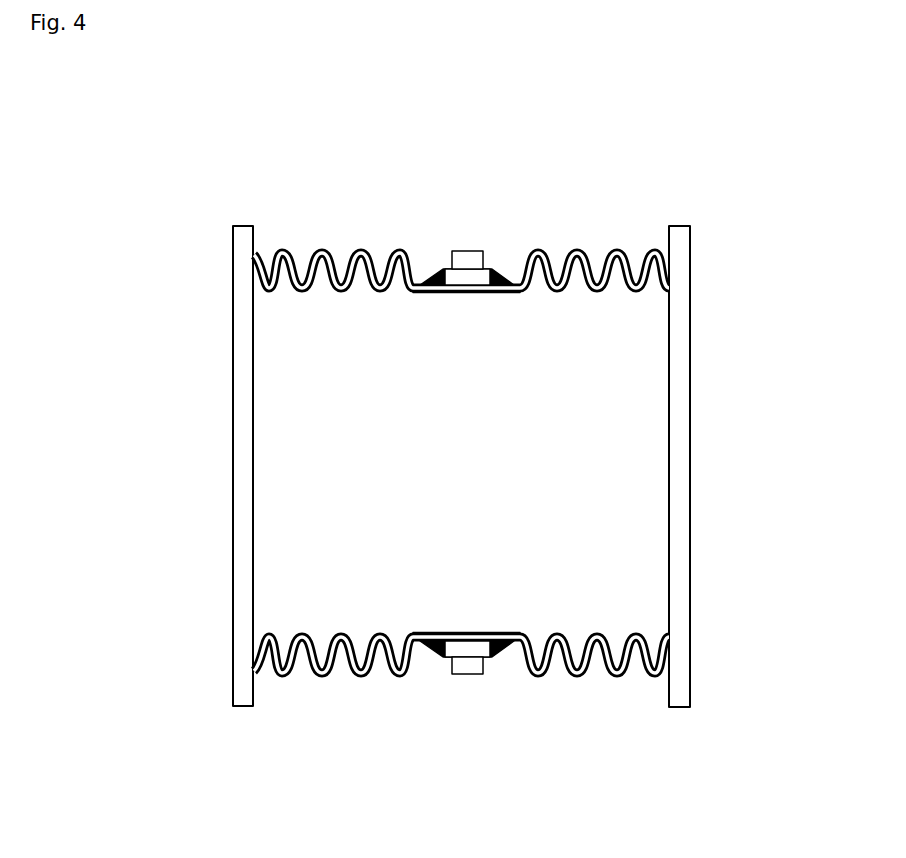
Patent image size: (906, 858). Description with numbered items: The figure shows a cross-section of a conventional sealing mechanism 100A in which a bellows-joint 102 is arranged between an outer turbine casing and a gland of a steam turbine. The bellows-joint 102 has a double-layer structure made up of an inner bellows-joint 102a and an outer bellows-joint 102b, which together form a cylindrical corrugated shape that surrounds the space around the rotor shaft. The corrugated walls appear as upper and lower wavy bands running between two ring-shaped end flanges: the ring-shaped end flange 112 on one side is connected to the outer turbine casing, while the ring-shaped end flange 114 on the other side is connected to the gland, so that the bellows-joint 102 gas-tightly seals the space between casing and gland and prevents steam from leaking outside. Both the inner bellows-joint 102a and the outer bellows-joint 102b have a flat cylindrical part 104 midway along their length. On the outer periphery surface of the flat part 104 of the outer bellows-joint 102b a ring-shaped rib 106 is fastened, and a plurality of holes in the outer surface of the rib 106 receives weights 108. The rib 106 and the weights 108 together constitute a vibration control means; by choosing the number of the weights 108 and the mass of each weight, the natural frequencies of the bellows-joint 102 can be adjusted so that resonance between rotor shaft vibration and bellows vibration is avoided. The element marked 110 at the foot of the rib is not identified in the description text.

The sealing mechanism 100A is at (434, 127).
The bellows-joint 102 is at (340, 135).
The inner bellows-joint 102a is at (305, 252).
The outer bellows-joint 102b is at (322, 248).
The flat part 104 is at (476, 292).
The rib 106 is at (492, 266).
The weights 108 is at (468, 251).
The braze joint 110 is at (440, 266).
The ring-shaped end flange 112 is at (233, 474).
The ring-shaped end flange 114 is at (690, 470).